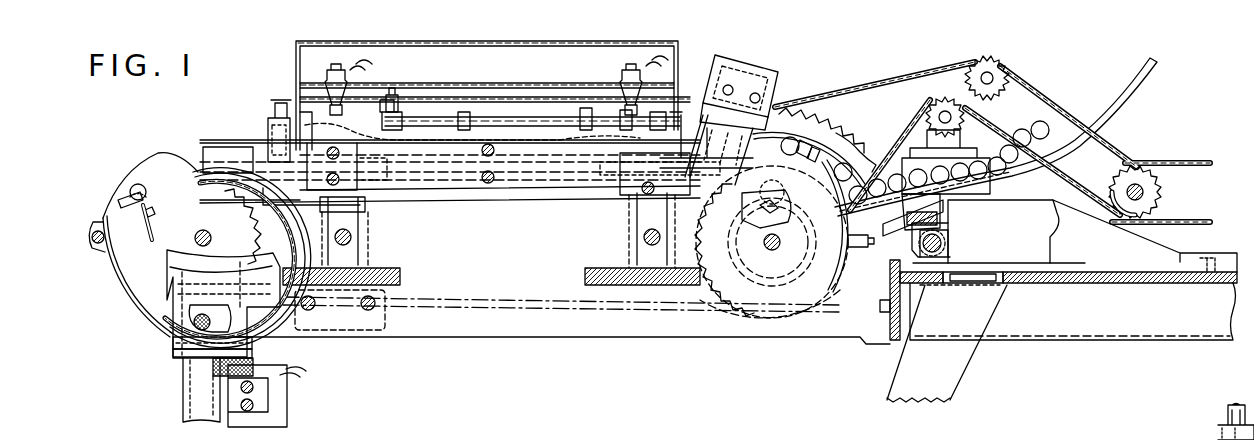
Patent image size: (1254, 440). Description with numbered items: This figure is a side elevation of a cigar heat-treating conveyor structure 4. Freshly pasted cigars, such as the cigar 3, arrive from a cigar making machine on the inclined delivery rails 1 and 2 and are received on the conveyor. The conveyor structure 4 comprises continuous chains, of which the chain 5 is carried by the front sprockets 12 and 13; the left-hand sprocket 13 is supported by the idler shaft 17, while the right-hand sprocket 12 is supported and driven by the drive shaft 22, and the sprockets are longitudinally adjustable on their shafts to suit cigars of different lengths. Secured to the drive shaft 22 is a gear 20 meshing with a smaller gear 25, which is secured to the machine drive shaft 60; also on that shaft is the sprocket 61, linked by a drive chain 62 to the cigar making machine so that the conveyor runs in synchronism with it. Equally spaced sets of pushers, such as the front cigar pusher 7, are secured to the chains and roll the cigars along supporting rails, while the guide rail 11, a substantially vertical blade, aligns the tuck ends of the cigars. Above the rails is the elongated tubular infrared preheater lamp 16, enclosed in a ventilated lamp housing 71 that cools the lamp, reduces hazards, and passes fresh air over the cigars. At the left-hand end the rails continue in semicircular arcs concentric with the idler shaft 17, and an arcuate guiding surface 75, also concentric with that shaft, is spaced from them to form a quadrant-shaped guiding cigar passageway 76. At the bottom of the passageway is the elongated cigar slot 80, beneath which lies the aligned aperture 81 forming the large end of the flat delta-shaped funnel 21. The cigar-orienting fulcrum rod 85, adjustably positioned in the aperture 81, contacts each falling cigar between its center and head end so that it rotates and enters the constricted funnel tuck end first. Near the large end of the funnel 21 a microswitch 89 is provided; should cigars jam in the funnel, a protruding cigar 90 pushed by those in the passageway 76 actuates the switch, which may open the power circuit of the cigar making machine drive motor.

The inclined delivery rail 1 is at (872, 206).
The inclined delivery rail 2 is at (1048, 320).
The cigar 3 is at (135, 184).
The conveyor structure 4 is at (620, 342).
The continuous chain 5 is at (485, 297).
The front cigar pusher 7 is at (118, 206).
The guide rail 11 is at (253, 148).
The front sprocket 12 is at (737, 292).
The front sprocket 13 is at (198, 170).
The preheater lamp 16 is at (486, 115).
The idler shaft 17 is at (200, 232).
The gear 20 is at (742, 234).
The funnel 21 is at (182, 378).
The drive shaft 22 is at (773, 250).
The gear 25 is at (748, 206).
The machine drive shaft 60 is at (814, 152).
The sprocket 61 is at (817, 122).
The drive chain 62 is at (900, 72).
The lamp housing 71 is at (298, 52).
The arcuate guiding surface 75 is at (125, 282).
The guiding cigar passageway 76 is at (150, 300).
The cigar slot 80 is at (185, 407).
The aperture 81 is at (172, 355).
The fulcrum rod 85 is at (175, 342).
The microswitch 89 is at (280, 398).
The cigar 90 is at (226, 320).